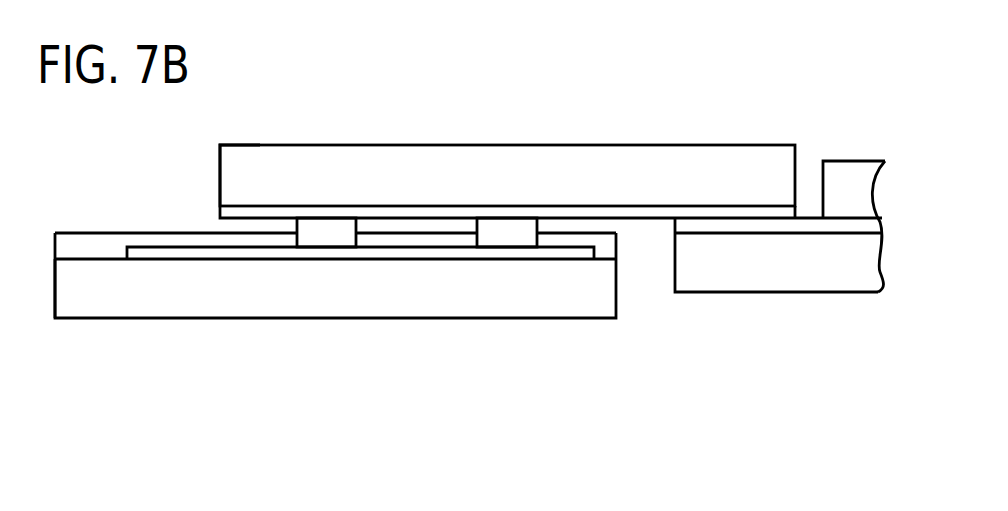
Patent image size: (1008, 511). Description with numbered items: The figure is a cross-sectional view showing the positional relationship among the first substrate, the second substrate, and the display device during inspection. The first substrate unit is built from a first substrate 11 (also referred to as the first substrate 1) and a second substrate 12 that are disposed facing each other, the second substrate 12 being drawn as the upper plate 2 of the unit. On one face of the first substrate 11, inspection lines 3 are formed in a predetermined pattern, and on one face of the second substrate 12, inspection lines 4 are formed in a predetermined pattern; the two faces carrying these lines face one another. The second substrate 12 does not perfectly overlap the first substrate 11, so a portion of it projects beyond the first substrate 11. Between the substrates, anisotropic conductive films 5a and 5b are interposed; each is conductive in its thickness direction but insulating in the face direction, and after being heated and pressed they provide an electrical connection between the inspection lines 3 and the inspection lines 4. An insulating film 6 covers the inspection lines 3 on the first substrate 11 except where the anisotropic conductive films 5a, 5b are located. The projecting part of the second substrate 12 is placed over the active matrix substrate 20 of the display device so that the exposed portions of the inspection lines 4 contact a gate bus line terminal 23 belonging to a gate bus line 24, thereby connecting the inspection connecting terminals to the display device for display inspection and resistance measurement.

The first substrate 1 is at (597, 297).
The semiconductor chip 2 is at (395, 163).
The inspection lines 3 is at (154, 251).
The inspection lines 4 is at (645, 211).
The anisotropic conductive film 5a is at (329, 233).
The anisotropic conductive film 5b is at (505, 233).
The insulating film 6 is at (85, 245).
The first substrate 11 is at (40, 287).
The second substrate 12 is at (240, 156).
The active matrix substrate 20 is at (828, 274).
The gate bus line terminal 23 is at (760, 226).
The gate bus line 24 is at (868, 228).